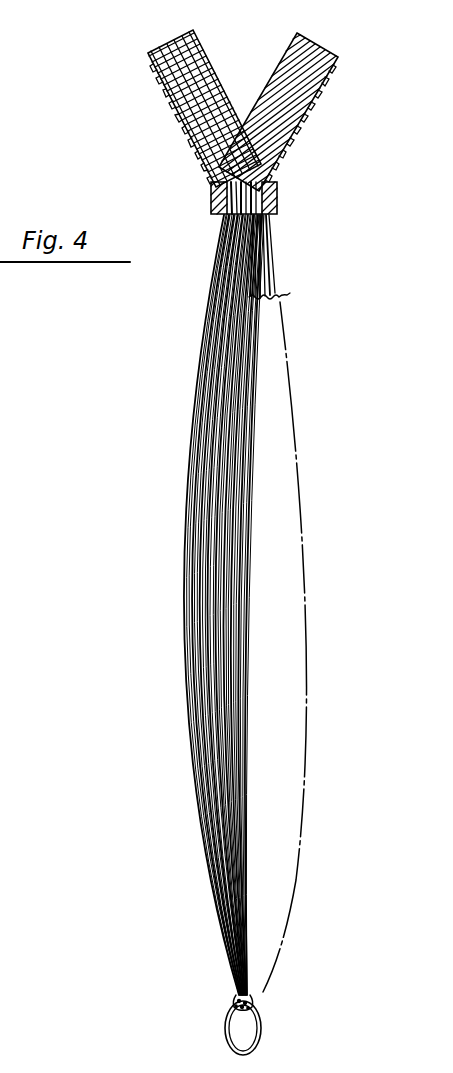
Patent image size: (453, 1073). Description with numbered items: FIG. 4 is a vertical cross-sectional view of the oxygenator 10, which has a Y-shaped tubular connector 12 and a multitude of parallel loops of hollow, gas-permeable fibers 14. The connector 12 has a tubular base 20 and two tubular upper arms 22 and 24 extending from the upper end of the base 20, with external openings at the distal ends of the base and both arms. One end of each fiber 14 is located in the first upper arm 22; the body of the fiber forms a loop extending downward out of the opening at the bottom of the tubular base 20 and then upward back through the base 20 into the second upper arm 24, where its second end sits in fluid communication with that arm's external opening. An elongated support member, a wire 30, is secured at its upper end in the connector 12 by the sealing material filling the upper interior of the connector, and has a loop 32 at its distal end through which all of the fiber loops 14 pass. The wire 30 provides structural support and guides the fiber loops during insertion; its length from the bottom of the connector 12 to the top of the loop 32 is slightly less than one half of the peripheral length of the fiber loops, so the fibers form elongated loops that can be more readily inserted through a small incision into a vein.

The oxygenator 10 is at (188, 344).
The Y-shaped tubular connector 12 is at (150, 120).
The hollow, gas-permeable fibers 14 is at (198, 458).
The tubular base 20 is at (211, 199).
The first upper arm 22 is at (153, 52).
The second upper arm 24 is at (330, 44).
The support member 30 is at (245, 619).
The loop 32 is at (259, 1035).